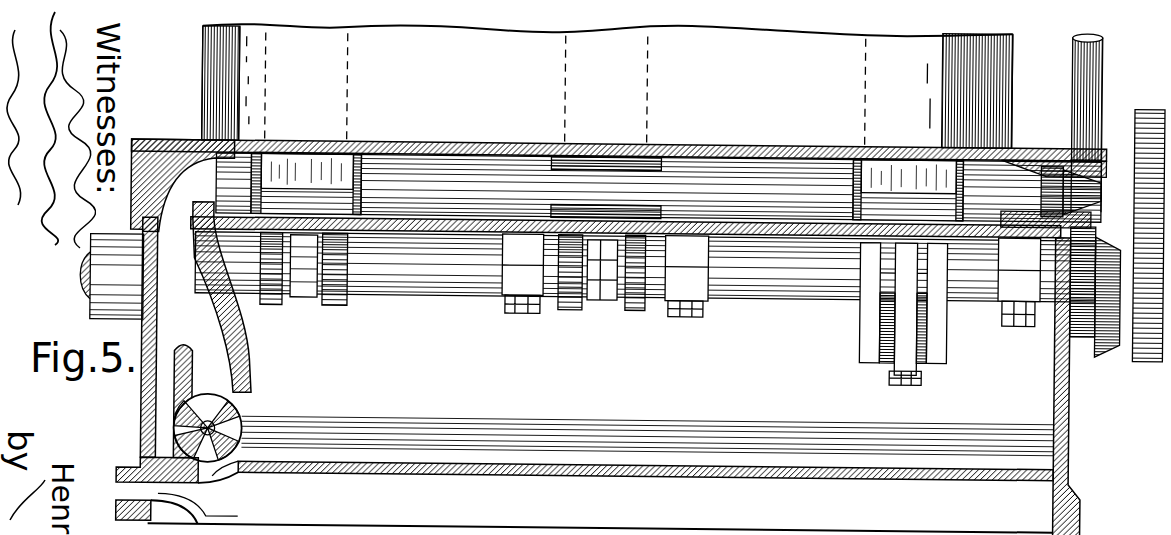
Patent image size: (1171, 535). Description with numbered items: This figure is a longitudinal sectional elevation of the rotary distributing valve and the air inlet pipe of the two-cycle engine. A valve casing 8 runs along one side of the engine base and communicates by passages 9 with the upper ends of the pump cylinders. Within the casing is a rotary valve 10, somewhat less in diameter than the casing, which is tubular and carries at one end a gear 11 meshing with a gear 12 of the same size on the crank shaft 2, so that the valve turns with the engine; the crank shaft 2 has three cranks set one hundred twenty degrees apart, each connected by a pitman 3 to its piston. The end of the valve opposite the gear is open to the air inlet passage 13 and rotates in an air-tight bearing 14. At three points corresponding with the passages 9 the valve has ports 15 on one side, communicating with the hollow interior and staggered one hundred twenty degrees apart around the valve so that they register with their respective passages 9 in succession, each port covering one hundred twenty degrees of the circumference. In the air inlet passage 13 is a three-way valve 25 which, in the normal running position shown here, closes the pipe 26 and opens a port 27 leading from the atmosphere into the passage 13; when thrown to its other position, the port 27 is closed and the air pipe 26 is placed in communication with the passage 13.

The crank shaft 2 is at (748, 288).
The pitman 3 is at (903, 266).
The valve casing 8 is at (409, 146).
The passages 9 is at (302, 51).
The rotary valve 10 is at (480, 172).
The gear 11 is at (1132, 121).
The gear 12 is at (1150, 355).
The air inlet passage 13 is at (212, 353).
The air-tight bearing 14 is at (240, 153).
The ports 15 is at (305, 160).
The three-way valve 25 is at (203, 399).
The pipe 26 is at (137, 497).
The port 27 is at (252, 437).